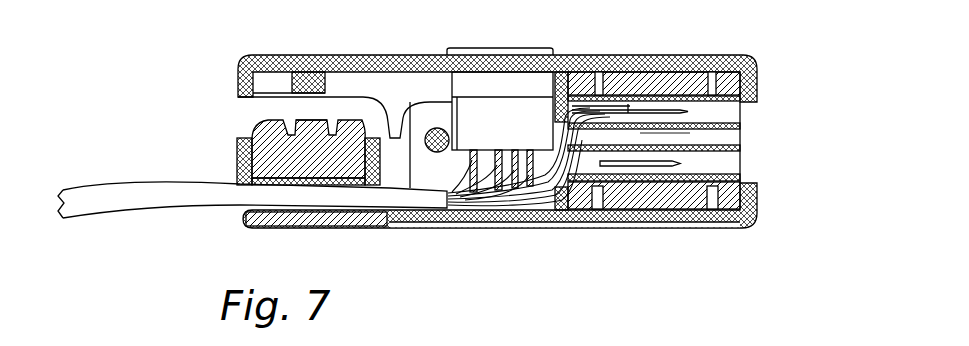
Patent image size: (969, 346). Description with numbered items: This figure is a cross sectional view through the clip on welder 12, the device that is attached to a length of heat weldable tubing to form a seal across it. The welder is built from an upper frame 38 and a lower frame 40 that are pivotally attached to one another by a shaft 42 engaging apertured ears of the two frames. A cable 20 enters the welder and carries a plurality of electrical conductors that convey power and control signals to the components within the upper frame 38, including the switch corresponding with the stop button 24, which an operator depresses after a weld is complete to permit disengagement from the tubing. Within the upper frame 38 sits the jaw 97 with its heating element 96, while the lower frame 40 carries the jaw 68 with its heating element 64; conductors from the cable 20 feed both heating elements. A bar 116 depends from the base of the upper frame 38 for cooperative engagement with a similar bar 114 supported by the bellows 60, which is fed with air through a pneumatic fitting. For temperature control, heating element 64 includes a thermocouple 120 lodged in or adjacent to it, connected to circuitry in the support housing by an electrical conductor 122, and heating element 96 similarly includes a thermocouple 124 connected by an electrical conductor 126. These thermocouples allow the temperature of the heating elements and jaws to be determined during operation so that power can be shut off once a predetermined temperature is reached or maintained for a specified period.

The clip on welder 12 is at (455, 236).
The cable 20 is at (105, 197).
The stop button 24 is at (507, 48).
The upper frame 38 is at (395, 55).
The lower frame 40 is at (367, 228).
The shaft 42 is at (436, 127).
The bellows 60 is at (253, 121).
The heating element 64 is at (729, 160).
The jaw 68 is at (727, 142).
The heating element 96 is at (742, 122).
The jaw 97 is at (683, 133).
The bar 114 is at (315, 122).
The bar 116 is at (332, 55).
The thermocouple 120 is at (728, 165).
The electrical conductor 122 is at (638, 158).
The thermocouple 124 is at (661, 112).
The electrical conductor 126 is at (613, 112).